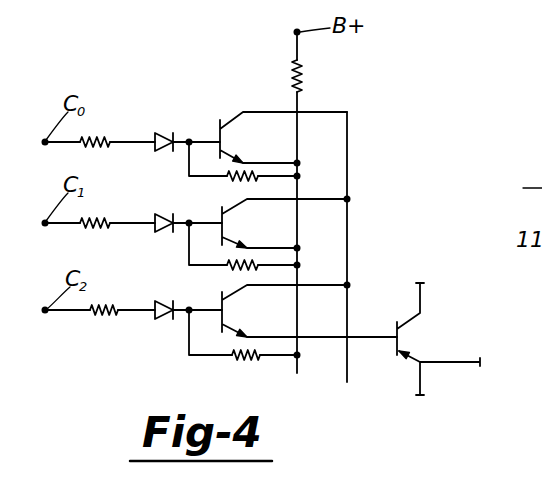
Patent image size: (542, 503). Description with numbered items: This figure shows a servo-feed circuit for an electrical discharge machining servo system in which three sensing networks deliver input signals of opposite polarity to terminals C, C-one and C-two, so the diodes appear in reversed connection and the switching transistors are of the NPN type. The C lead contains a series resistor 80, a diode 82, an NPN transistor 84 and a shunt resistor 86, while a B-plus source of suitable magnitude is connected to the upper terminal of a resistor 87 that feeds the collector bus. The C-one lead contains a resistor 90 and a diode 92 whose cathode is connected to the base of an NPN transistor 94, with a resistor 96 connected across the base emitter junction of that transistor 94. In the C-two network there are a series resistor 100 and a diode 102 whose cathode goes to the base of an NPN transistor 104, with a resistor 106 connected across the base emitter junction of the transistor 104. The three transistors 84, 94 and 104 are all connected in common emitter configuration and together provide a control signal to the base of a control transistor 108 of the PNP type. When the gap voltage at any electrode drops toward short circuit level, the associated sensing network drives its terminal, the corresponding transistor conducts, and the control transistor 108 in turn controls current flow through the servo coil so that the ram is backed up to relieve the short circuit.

The series resistor 80 is at (94, 137).
The diode 82 is at (162, 134).
The NPN transistor 84 is at (221, 124).
The shunt resistor 86 is at (231, 181).
The resistor 87 is at (301, 74).
The resistor 90 is at (94, 218).
The diode 92 is at (165, 215).
The NPN transistor 94 is at (231, 218).
The resistor 96 is at (235, 269).
The series resistor 100 is at (100, 305).
The diode 102 is at (165, 318).
The NPN transistor 104 is at (230, 316).
The resistor 106 is at (238, 360).
The control PNP transistor 108 is at (397, 352).